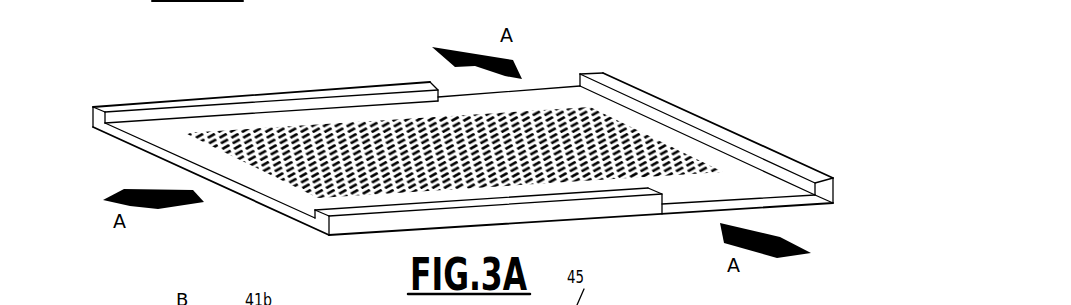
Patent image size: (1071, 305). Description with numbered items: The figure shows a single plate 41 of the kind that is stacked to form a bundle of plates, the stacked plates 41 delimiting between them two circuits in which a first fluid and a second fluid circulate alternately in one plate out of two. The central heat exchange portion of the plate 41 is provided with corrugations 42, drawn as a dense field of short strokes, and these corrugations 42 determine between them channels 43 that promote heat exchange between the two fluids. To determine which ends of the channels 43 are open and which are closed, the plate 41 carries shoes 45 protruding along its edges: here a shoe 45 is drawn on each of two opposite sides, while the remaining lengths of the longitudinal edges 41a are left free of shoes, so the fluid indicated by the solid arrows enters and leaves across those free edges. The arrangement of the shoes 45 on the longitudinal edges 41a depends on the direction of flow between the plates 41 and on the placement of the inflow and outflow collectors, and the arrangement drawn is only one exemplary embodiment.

The plate 41 is at (463, 137).
The longitudinal edge 41a is at (549, 82).
The corrugations 42 is at (448, 114).
The channels 43 is at (223, 135).
The shoe 45 is at (160, 104).